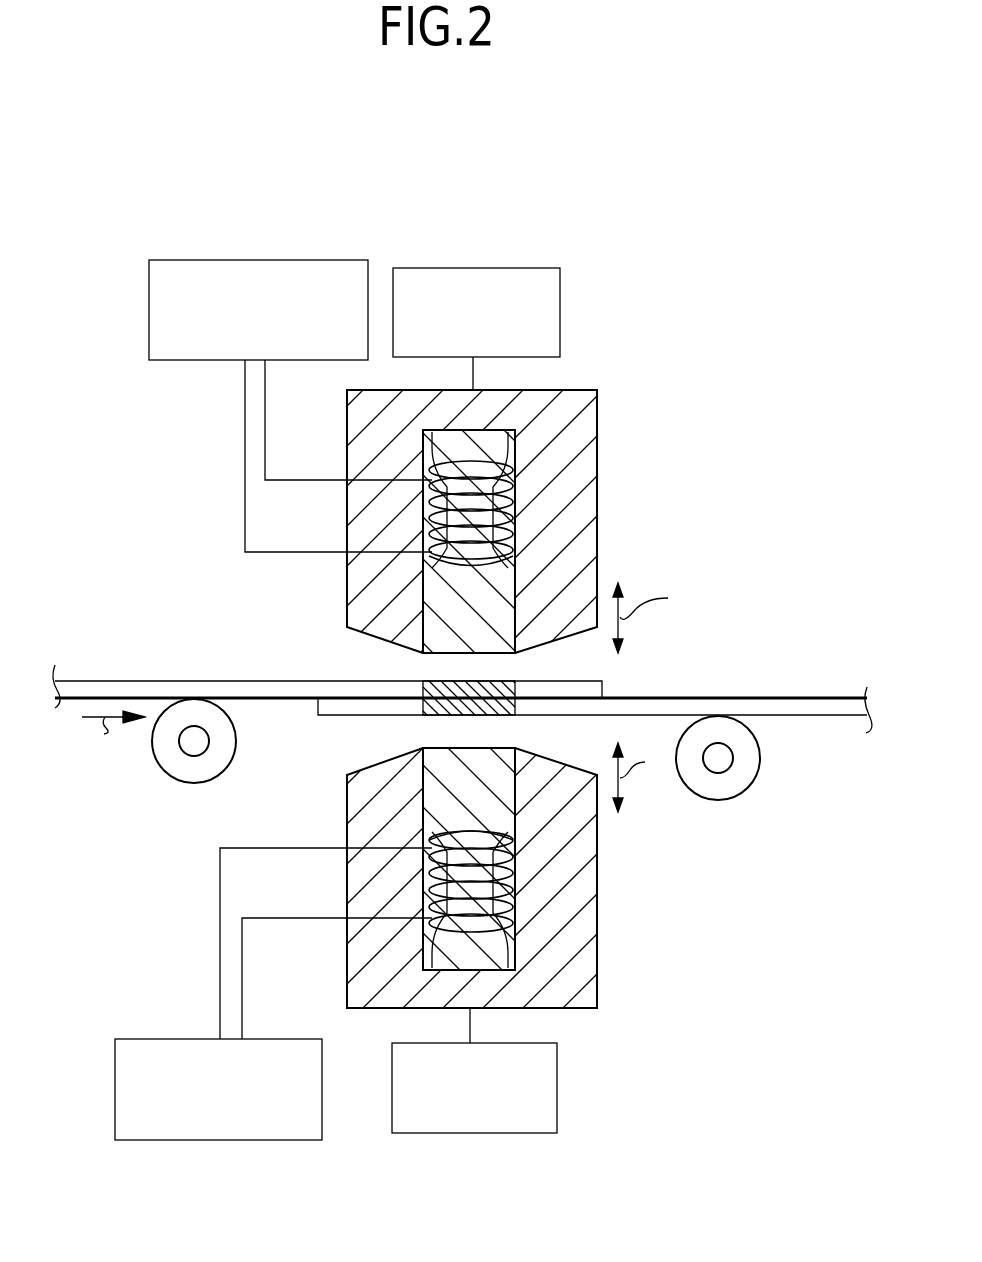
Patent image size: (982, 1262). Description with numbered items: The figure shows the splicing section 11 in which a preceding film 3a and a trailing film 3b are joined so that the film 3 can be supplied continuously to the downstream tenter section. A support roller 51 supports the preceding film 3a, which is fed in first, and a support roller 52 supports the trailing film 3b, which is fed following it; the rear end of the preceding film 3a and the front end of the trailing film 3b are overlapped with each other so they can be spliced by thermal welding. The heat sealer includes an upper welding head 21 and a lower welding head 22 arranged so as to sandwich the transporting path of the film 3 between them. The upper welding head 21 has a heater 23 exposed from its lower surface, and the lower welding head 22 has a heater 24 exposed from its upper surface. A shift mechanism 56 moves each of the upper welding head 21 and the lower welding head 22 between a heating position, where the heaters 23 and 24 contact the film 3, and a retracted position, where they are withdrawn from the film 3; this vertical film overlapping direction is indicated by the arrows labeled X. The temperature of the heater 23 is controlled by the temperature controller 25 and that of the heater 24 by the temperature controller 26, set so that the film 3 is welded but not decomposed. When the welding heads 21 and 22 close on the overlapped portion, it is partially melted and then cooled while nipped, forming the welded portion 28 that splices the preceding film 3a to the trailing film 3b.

The splicing section 11 is at (613, 190).
The film 3 is at (462, 691).
The preceding film 3a is at (816, 707).
The trailing film 3b is at (72, 690).
The upper welding head 21 is at (383, 641).
The lower welding head 22 is at (388, 760).
The heater 23 is at (495, 598).
The heater 24 is at (500, 783).
The temperature controller 25 is at (268, 260).
The temperature controller 26 is at (228, 1141).
The welded portion 28 is at (547, 682).
The support roller 51 is at (693, 793).
The support roller 52 is at (170, 776).
The shift mechanism 56 is at (477, 268).